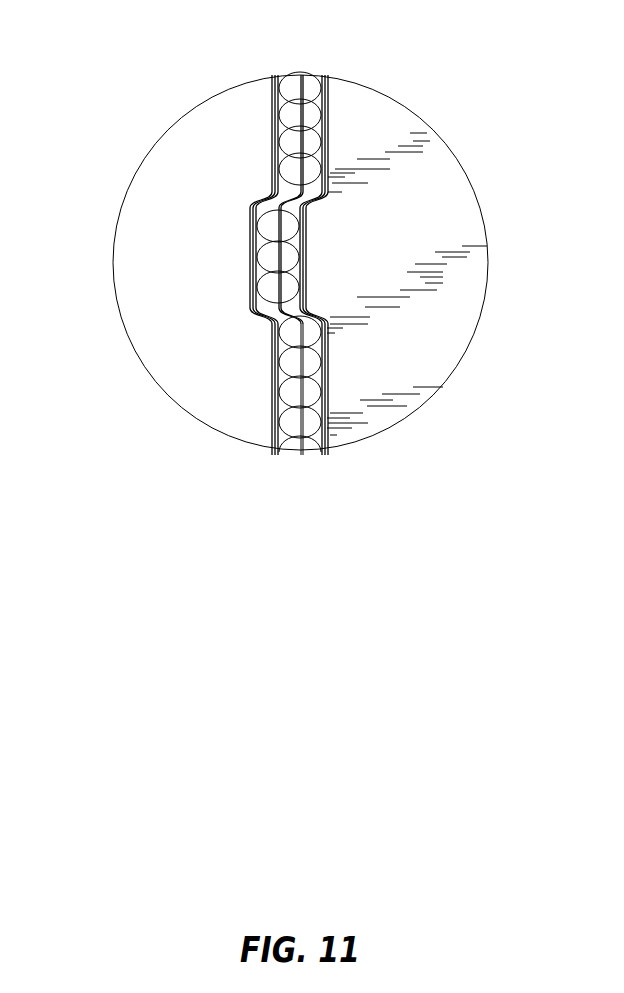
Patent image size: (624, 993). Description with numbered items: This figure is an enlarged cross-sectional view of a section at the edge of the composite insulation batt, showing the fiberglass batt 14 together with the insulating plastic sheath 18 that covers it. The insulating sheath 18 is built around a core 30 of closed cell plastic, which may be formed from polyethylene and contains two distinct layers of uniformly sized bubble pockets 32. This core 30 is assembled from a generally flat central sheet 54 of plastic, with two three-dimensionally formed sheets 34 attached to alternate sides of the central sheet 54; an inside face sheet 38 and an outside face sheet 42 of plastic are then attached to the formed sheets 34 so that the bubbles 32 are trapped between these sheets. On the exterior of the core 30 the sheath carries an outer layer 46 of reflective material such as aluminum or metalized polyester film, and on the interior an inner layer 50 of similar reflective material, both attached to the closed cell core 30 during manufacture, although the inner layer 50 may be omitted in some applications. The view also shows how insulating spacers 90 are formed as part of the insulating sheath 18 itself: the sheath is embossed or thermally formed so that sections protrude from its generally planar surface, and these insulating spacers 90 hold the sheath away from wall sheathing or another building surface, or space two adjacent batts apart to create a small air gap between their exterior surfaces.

The fiberglass batt 14 is at (393, 242).
The insulating plastic sheath 18 is at (316, 107).
The core 30 is at (316, 167).
The bubble pockets 32 is at (277, 333).
The 3D formed sheets 34 is at (290, 155).
The inside face sheet 38 is at (323, 355).
The outside face sheet 42 is at (278, 372).
The outer layer 46 is at (275, 422).
The inner layer 50 is at (325, 402).
The central sheet 54 is at (303, 105).
The insulating spacers 90 is at (255, 243).